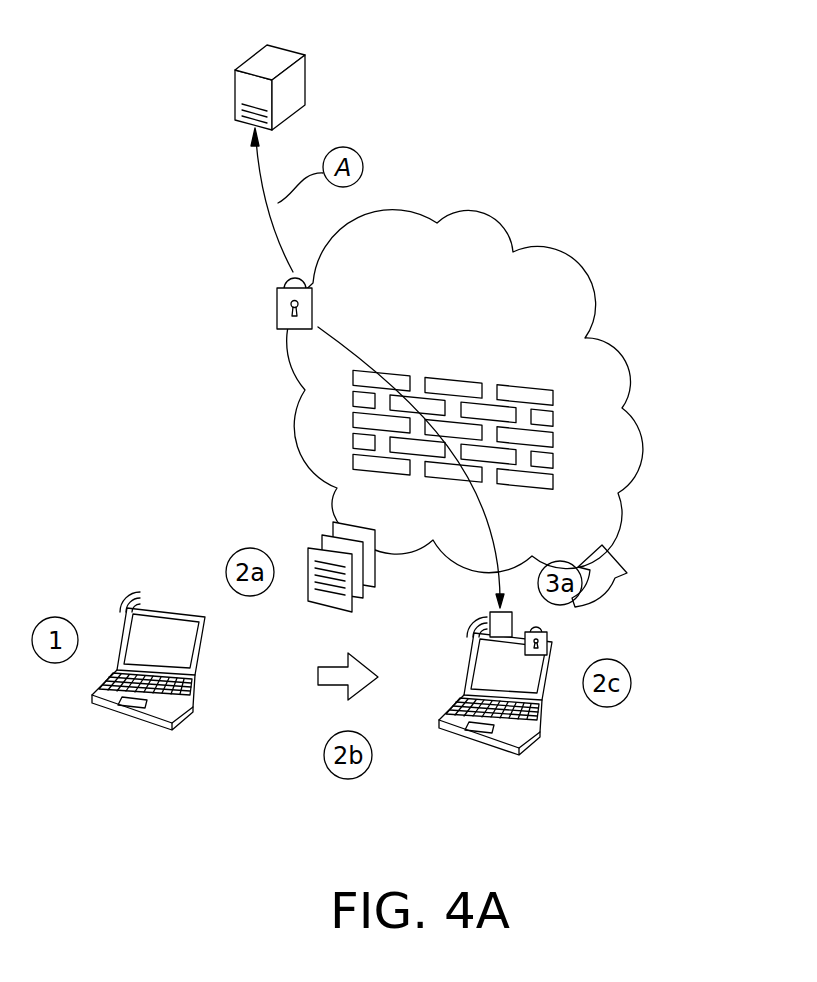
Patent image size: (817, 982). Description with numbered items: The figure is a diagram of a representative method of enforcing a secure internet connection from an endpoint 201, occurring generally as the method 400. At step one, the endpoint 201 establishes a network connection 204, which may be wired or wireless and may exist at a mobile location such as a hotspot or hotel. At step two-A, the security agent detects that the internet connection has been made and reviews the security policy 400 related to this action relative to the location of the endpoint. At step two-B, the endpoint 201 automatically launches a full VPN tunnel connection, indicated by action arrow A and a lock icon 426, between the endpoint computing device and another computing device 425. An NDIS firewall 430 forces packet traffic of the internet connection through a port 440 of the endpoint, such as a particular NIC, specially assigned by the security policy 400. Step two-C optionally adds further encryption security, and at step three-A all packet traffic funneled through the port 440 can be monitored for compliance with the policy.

The endpoint 201 is at (123, 710).
The network connection 204 is at (488, 220).
The security policy 400 is at (317, 545).
The another computing device 425 is at (272, 64).
The lock icon 426 is at (277, 306).
The NDIS firewall 430 is at (530, 343).
The port 440 is at (468, 630).